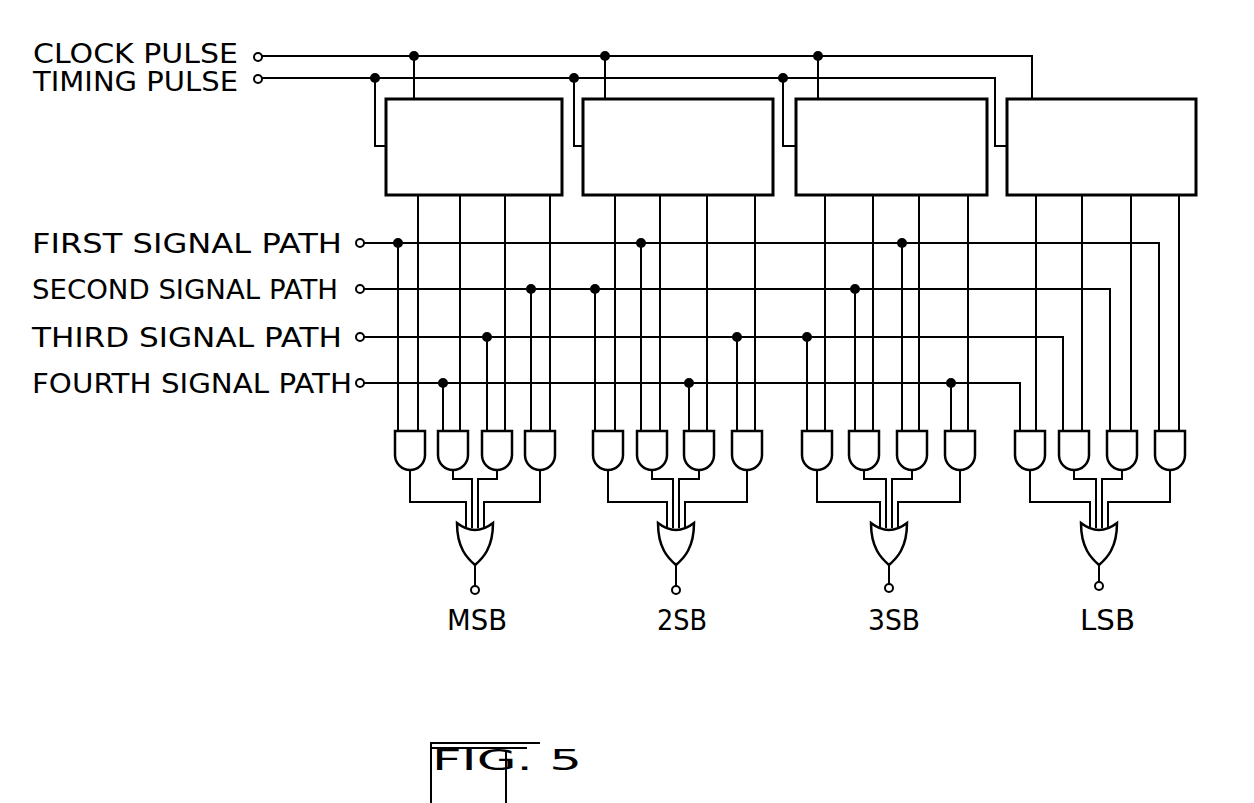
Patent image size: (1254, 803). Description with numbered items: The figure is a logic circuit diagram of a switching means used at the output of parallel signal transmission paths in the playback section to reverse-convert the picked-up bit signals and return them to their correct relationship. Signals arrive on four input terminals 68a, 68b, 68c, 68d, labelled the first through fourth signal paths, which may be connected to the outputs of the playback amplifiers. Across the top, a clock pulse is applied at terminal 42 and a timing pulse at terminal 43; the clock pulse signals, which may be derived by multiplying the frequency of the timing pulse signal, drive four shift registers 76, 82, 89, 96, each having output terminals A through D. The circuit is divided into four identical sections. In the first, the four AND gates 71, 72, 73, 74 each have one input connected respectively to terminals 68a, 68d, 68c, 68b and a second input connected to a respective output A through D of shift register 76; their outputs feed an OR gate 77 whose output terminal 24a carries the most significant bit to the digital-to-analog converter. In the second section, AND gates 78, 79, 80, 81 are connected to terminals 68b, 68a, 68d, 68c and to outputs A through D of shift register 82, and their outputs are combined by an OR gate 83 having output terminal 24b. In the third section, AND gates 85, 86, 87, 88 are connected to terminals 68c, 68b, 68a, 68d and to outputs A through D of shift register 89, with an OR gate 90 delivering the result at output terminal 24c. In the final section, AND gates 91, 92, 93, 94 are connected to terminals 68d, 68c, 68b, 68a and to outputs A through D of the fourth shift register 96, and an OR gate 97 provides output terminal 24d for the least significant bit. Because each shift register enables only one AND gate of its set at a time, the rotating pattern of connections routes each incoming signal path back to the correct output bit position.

The clock pulse input terminal 42 is at (263, 55).
The timing pulse input terminal 43 is at (262, 82).
The first input terminal 68a is at (358, 239).
The second input terminal 68b is at (358, 285).
The third input terminal 68c is at (358, 333).
The fourth input terminal 68d is at (358, 379).
The shift register 76 is at (561, 197).
The shift register 82 is at (770, 197).
The shift register 89 is at (982, 197).
The fourth shift register 96 is at (1195, 197).
The AND gate 71 is at (397, 467).
The AND gate 72 is at (441, 467).
The AND gate 73 is at (508, 467).
The AND gate 74 is at (551, 467).
The OR gate 77 is at (493, 540).
The AND gate 78 is at (593, 442).
The AND gate 79 is at (640, 467).
The AND gate 80 is at (710, 467).
The AND gate 81 is at (762, 442).
The OR gate 83 is at (694, 540).
The AND gate 85 is at (804, 467).
The AND gate 86 is at (852, 467).
The AND gate 87 is at (923, 467).
The AND gate 88 is at (971, 467).
The OR gate 90 is at (907, 540).
The AND gate 91 is at (1015, 442).
The AND gate 92 is at (1062, 467).
The AND gate 93 is at (1133, 467).
The AND gate 94 is at (1183, 462).
The OR gate 97 is at (1116, 537).
The output terminal 24a is at (479, 589).
The output terminal 24b is at (680, 589).
The output terminal 24c is at (893, 586).
The output terminal 24d is at (1103, 584).